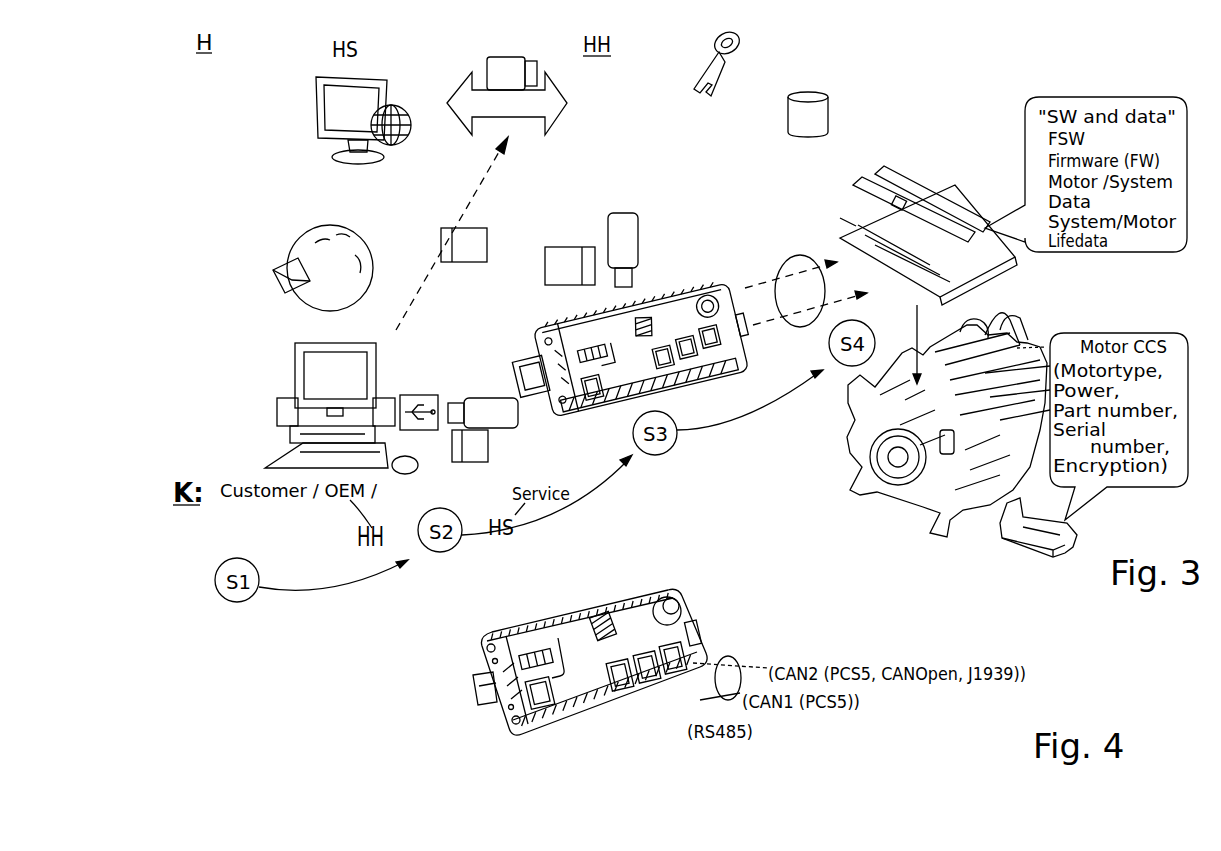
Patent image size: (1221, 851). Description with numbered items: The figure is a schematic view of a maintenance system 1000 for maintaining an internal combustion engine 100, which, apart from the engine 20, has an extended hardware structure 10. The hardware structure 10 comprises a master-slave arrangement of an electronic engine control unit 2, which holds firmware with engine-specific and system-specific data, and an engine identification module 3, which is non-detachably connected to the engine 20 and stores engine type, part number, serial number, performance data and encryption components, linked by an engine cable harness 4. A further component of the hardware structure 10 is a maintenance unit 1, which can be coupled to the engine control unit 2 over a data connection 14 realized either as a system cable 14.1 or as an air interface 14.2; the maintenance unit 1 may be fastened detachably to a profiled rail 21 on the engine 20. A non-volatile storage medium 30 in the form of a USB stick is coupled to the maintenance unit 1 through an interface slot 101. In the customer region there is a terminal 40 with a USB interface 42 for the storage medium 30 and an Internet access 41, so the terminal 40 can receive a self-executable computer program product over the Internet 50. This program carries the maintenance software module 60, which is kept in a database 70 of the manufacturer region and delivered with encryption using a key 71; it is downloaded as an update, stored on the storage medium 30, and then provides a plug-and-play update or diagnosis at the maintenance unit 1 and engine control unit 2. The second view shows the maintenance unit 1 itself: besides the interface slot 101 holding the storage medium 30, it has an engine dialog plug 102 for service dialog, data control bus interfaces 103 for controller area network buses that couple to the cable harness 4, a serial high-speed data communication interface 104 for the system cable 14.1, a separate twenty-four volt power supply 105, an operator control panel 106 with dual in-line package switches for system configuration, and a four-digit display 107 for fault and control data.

In FIG. 3, the maintenance unit 1 is at (688, 290).
In FIG. 4, the maintenance unit 1 is at (610, 558).
In FIG. 3, the electronic engine control unit 2 is at (955, 215).
In FIG. 3, the engine identification module 3 is at (1043, 558).
In FIG. 3, the engine cable harness 4 is at (992, 462).
In FIG. 3, the hardware structure 10 is at (731, 229).
In FIG. 3, the data connection 14 is at (798, 255).
In FIG. 3, the system cable 14.1 is at (762, 283).
In FIG. 3, the air interface 14.2 is at (767, 320).
In FIG. 3, the engine 20 is at (826, 406).
In FIG. 3, the profiled rail 21 is at (527, 405).
In FIG. 3, the non-volatile storage medium 30 is at (488, 398).
In FIG. 4, the non-volatile storage medium 30 is at (610, 618).
In FIG. 3, the terminal 40 is at (300, 398).
In FIG. 3, the Internet access 41 is at (400, 333).
In FIG. 3, the interface 42 is at (423, 395).
In FIG. 3, the Internet 50 is at (285, 248).
In FIG. 3, the maintenance software module 60 is at (488, 63).
In FIG. 3, the database 70 is at (830, 118).
In FIG. 3, the key 71 is at (703, 72).
In FIG. 3, the internal combustion engine 100 is at (1128, 301).
In FIG. 3, the maintenance system 1000 is at (1126, 64).
In FIG. 4, the interface slot 101 is at (604, 600).
In FIG. 4, the engine dialog plug 102 is at (688, 580).
In FIG. 4, the data control bus interface 103 is at (732, 668).
In FIG. 4, the high-speed data communication interface 104 is at (680, 707).
In FIG. 4, the power supply 105 is at (588, 723).
In FIG. 4, the operator control panel 106 is at (500, 698).
In FIG. 4, the display 107 is at (540, 648).